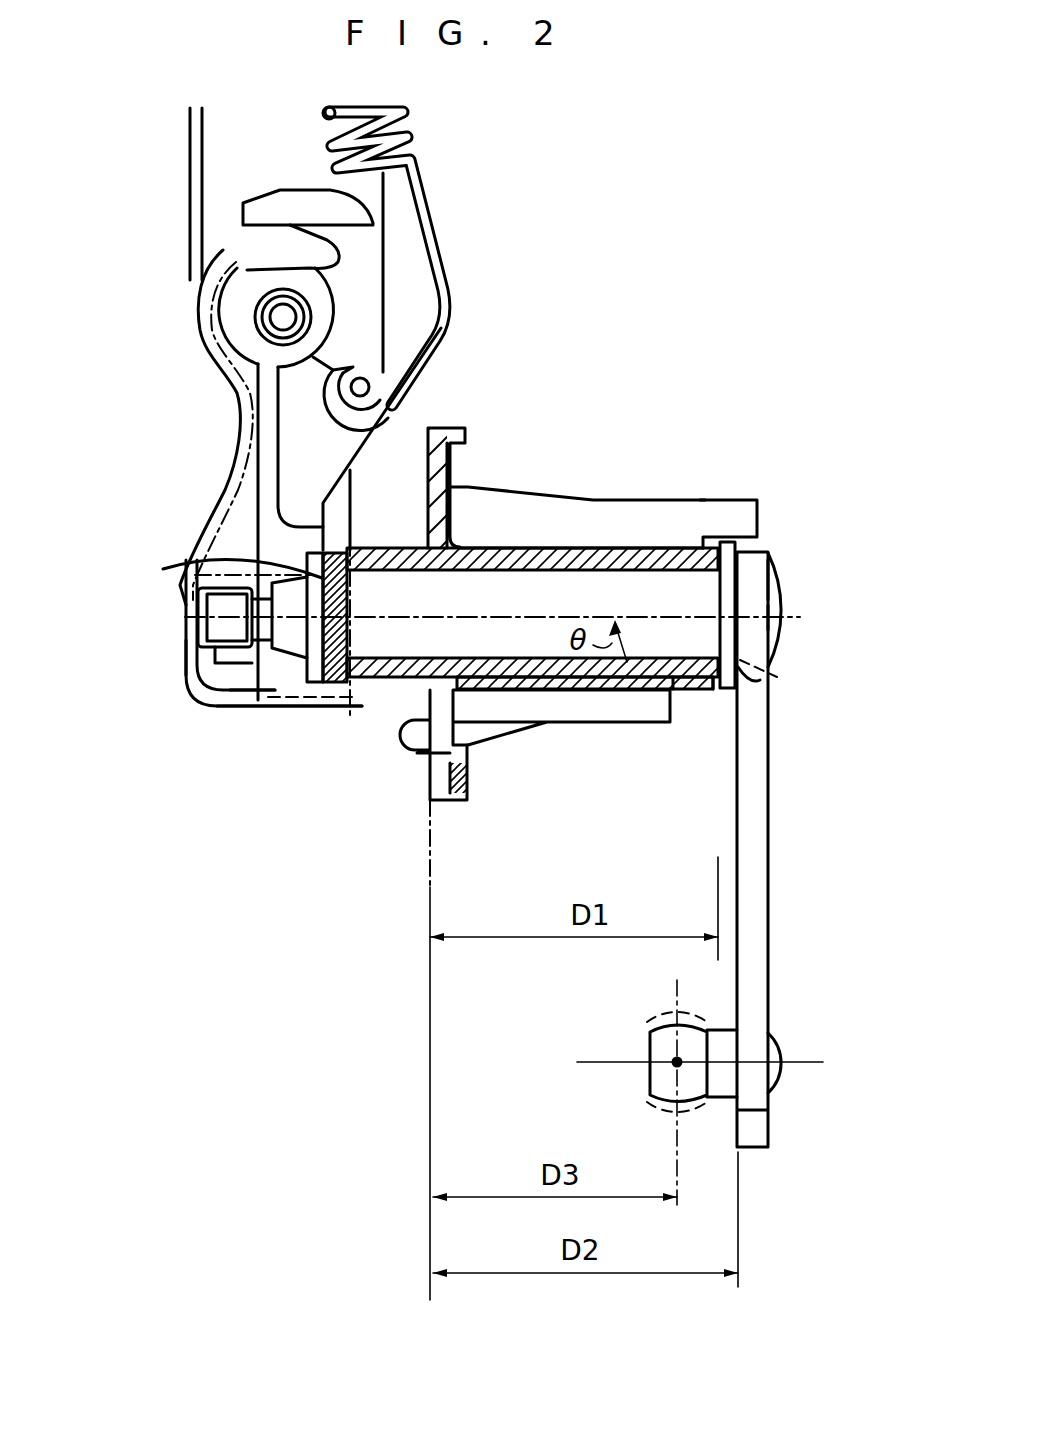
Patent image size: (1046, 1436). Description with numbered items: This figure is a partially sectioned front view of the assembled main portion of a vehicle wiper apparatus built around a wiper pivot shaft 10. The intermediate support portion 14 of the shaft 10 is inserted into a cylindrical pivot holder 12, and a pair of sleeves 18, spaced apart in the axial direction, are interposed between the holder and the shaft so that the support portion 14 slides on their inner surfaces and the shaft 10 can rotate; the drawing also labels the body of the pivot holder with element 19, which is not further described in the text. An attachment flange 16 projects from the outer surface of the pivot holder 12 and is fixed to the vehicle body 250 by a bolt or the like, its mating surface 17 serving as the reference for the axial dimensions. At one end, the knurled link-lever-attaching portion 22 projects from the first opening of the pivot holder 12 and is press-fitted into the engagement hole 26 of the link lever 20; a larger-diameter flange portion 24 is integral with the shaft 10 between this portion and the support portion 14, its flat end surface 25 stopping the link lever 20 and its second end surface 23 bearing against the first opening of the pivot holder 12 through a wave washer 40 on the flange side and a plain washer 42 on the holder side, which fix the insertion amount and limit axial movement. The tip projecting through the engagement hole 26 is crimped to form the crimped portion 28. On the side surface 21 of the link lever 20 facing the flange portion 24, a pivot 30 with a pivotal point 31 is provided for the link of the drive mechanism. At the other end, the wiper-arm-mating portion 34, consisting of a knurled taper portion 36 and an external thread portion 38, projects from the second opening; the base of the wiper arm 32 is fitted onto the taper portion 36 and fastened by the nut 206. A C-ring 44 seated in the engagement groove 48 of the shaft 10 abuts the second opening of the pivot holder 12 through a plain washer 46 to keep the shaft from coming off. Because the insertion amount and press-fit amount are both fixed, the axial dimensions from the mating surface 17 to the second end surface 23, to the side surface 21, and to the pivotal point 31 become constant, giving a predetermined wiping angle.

The wiper pivot shaft 10 is at (567, 555).
The pivot holder 12 is at (385, 548).
The support portion 14 is at (718, 810).
The attachment flange 16 is at (440, 427).
The mating surface 17 is at (470, 757).
The sleeves 18 is at (387, 723).
The cylindrical body 19 is at (520, 567).
The link lever 20 is at (772, 825).
The side surface 21 is at (740, 597).
The link-lever-attaching portion 22 is at (753, 677).
The second end surface 23 is at (677, 548).
The flange portion 24 is at (737, 557).
The flat end surface 25 is at (757, 670).
The engagement hole 26 is at (787, 617).
The crimped portion 28 is at (778, 587).
The pivot 30 is at (672, 1060).
The pivotal point 31 is at (693, 1087).
The wiper arm 32 is at (248, 672).
The wiper-arm-mating portion 34 is at (118, 817).
The taper portion 36 is at (305, 655).
The external thread portion 38 is at (198, 630).
The wave washer 40 is at (733, 723).
The plain washer 42 is at (707, 683).
The C-ring 44 is at (318, 657).
The plain washer 46 is at (352, 685).
The engagement groove 48 is at (325, 578).
The nut 206 is at (192, 592).
The vehicle body 250 is at (417, 817).